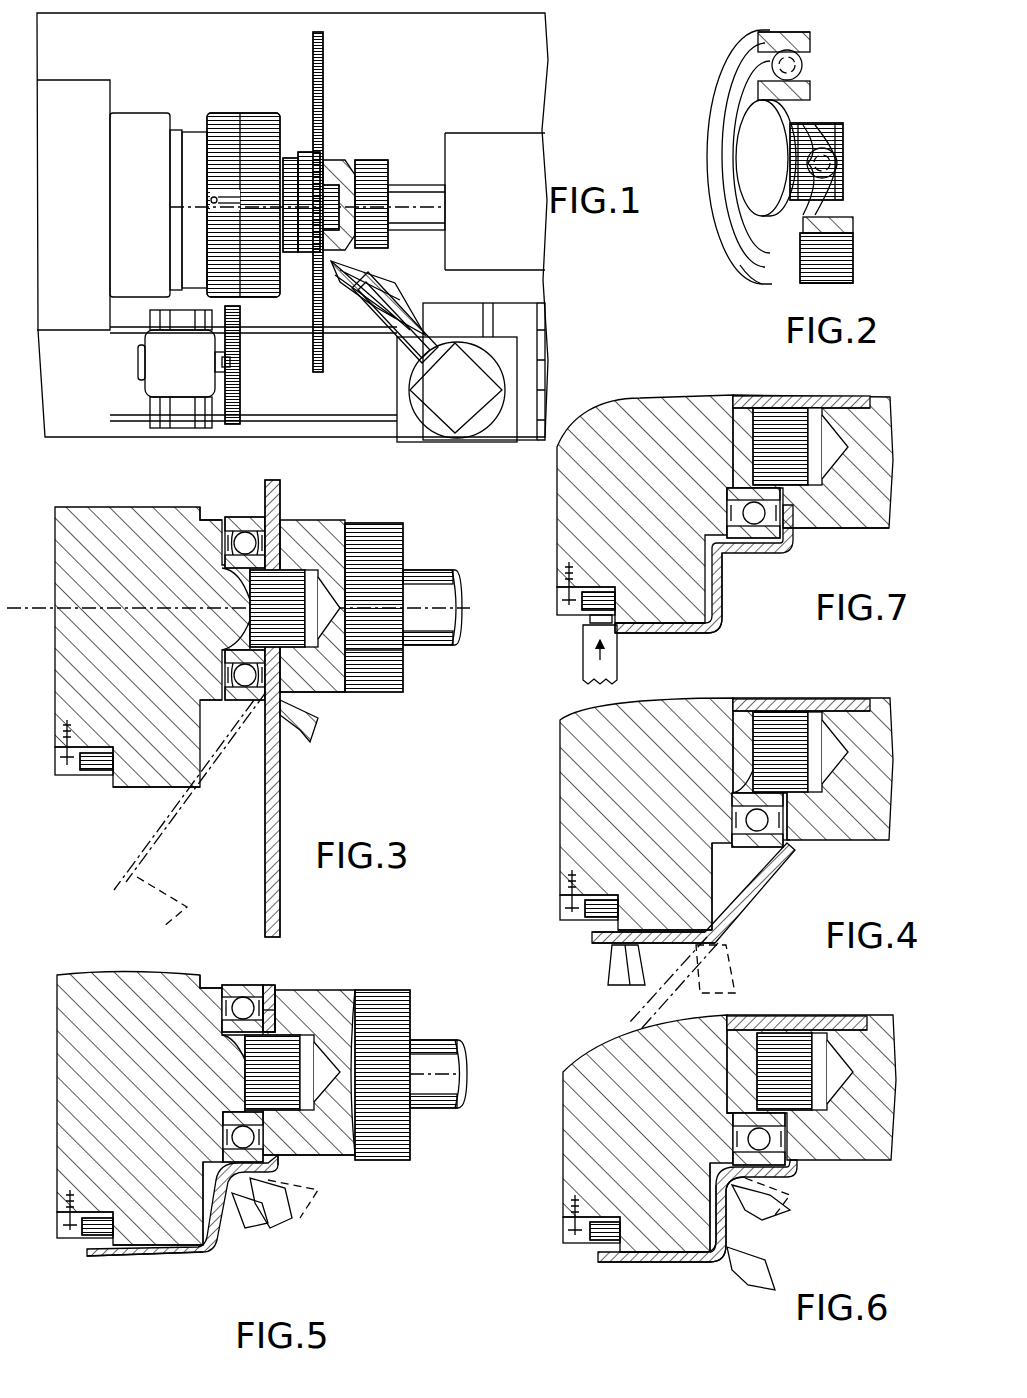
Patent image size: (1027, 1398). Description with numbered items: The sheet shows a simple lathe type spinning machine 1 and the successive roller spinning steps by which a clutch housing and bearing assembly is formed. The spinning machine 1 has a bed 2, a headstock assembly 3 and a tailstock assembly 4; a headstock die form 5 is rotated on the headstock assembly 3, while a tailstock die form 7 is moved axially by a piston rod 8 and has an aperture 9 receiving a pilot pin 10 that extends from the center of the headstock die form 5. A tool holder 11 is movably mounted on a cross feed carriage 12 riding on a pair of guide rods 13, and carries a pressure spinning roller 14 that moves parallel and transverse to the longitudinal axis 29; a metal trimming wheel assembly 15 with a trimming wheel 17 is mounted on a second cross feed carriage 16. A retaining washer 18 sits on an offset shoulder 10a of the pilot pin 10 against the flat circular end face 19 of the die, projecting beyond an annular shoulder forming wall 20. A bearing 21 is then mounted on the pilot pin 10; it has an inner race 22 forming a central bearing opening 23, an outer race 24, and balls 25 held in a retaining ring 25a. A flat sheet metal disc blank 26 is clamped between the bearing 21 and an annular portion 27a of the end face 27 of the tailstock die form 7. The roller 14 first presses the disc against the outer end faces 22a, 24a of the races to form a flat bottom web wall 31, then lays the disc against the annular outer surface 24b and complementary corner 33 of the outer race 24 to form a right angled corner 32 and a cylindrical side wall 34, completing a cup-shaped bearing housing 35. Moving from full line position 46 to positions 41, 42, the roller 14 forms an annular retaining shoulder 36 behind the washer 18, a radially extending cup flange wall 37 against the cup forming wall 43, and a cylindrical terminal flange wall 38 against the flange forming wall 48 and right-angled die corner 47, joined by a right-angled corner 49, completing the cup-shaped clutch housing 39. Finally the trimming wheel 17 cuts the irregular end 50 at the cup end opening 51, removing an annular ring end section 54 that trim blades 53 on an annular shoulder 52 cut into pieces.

In FIG. 1, the spinning machine 1 is at (552, 66).
In FIG. 1, the bed 2 is at (438, 63).
In FIG. 1, the headstock assembly 3 is at (112, 100).
In FIG. 1, the tailstock assembly 4 is at (468, 130).
In FIG. 1, the headstock die form 5 is at (258, 112).
In FIG. 3, the headstock die form 5 is at (78, 552).
In FIG. 7, the headstock die form 5 is at (588, 497).
In FIG. 4, the headstock die form 5 is at (585, 783).
In FIG. 6, the headstock die form 5 is at (585, 1125).
In FIG. 5, the headstock die form 5 is at (92, 972).
In FIG. 1, the tailstock die form 7 is at (362, 160).
In FIG. 3, the tailstock die form 7 is at (395, 540).
In FIG. 7, the tailstock die form 7 is at (872, 533).
In FIG. 4, the tailstock die form 7 is at (872, 700).
In FIG. 6, the tailstock die form 7 is at (875, 1163).
In FIG. 5, the tailstock die form 7 is at (413, 1005).
In FIG. 1, the piston rod 8 is at (410, 187).
In FIG. 3, the piston rod 8 is at (430, 578).
In FIG. 5, the piston rod 8 is at (445, 1048).
In FIG. 1, the aperture 9 is at (335, 160).
In FIG. 3, the aperture 9 is at (325, 555).
In FIG. 7, the aperture 9 is at (830, 470).
In FIG. 5, the aperture 9 is at (309, 1072).
In FIG. 1, the pilot pin 10 is at (336, 212).
In FIG. 3, the pilot pin 10 is at (290, 575).
In FIG. 7, the pilot pin 10 is at (787, 437).
In FIG. 4, the pilot pin 10 is at (800, 715).
In FIG. 6, the pilot pin 10 is at (800, 1040).
In FIG. 5, the pilot pin 10 is at (295, 1058).
In FIG. 3, the offset shoulder 10a is at (222, 560).
In FIG. 5, the offset shoulder 10a is at (235, 1030).
In FIG. 1, the tool holder 11 is at (520, 372).
In FIG. 1, the cross feed carriage 12 is at (525, 320).
In FIG. 1, the guide rods 13 is at (283, 335).
In FIG. 1, the pressure spinning roller 14 is at (372, 318).
In FIG. 3, the pressure spinning roller 14 is at (322, 722).
In FIG. 4, the pressure spinning roller 14 is at (682, 982).
In FIG. 6, the pressure spinning roller 14 is at (770, 1268).
In FIG. 5, the pressure spinning roller 14 is at (250, 1225).
In FIG. 1, the metal trimming wheel assembly 15 is at (143, 393).
In FIG. 1, the second cross feed carriage 16 is at (153, 418).
In FIG. 1, the trimming wheel 17 is at (232, 425).
In FIG. 7, the trimming wheel 17 is at (582, 672).
In FIG. 1, the retaining washer 18 is at (291, 255).
In FIG. 3, the retaining washer 18 is at (236, 518).
In FIG. 5, the retaining washer 18 is at (228, 985).
In FIG. 3, the flat circular end face 19 is at (225, 527).
In FIG. 5, the flat circular end face 19 is at (222, 1150).
In FIG. 3, the annular shoulder forming wall 20 is at (225, 688).
In FIG. 4, the annular shoulder forming wall 20 is at (735, 840).
In FIG. 6, the annular shoulder forming wall 20 is at (722, 1155).
In FIG. 5, the annular shoulder forming wall 20 is at (210, 985).
In FIG. 1, the bearing 21 is at (305, 150).
In FIG. 2, the bearing 21 is at (706, 96).
In FIG. 3, the bearing 21 is at (240, 705).
In FIG. 2, the inner race 22 is at (850, 145).
In FIG. 2, the outer end face of inner race 22a is at (747, 92).
In FIG. 2, the central bearing opening 23 is at (745, 178).
In FIG. 3, the central bearing opening 23 is at (240, 570).
In FIG. 4, the central bearing opening 23 is at (750, 770).
In FIG. 2, the outer race 24 is at (830, 258).
In FIG. 2, the outer end face of outer race 24a is at (742, 270).
In FIG. 5, the outer end face of outer race 24a is at (276, 985).
In FIG. 2, the annular outer surface of outer race 24b is at (787, 32).
In FIG. 5, the annular outer surface of outer race 24b is at (265, 985).
In FIG. 2, the balls 25 is at (799, 64).
In FIG. 2, the retaining ring 25a is at (845, 130).
In FIG. 1, the flat sheet metal disc blank 26 is at (325, 52).
In FIG. 3, the flat sheet metal disc blank 26 is at (281, 805).
In FIG. 3, the end face of tailstock die 27 is at (374, 656).
In FIG. 4, the end face of tailstock die 27 is at (787, 795).
In FIG. 3, the annular portion of end face 27a is at (300, 693).
In FIG. 4, the annular portion of end face 27a is at (792, 822).
In FIG. 5, the annular portion of end face 27a is at (280, 1150).
In FIG. 3, the longitudinal axis 29 is at (483, 610).
In FIG. 5, the flat bottom web wall 31 is at (272, 1005).
In FIG. 4, the right angled corner 32 is at (792, 852).
In FIG. 6, the right angled corner 32 is at (800, 1172).
In FIG. 5, the right angled corner 32 is at (282, 1167).
In FIG. 2, the complementary corner 33 is at (765, 288).
In FIG. 5, the complementary corner 33 is at (278, 1160).
In FIG. 6, the cylindrical side wall 34 is at (775, 1190).
In FIG. 5, the cylindrical side wall 34 is at (280, 1228).
In FIG. 7, the cup-shaped bearing housing 35 is at (792, 549).
In FIG. 5, the cup-shaped bearing housing 35 is at (278, 985).
In FIG. 7, the annular retaining shoulder 36 is at (712, 537).
In FIG. 6, the annular retaining shoulder 36 is at (730, 1160).
In FIG. 7, the radially extending cup flange wall 37 is at (723, 600).
In FIG. 6, the radially extending cup flange wall 37 is at (728, 1228).
In FIG. 7, the cylindrical terminal flange wall 38 is at (680, 634).
In FIG. 4, the cylindrical terminal flange wall 38 is at (670, 946).
In FIG. 6, the cylindrical terminal flange wall 38 is at (645, 1265).
In FIG. 5, the cylindrical terminal flange wall 38 is at (150, 1257).
In FIG. 7, the cup-shaped clutch housing 39 is at (720, 632).
In FIG. 6, the full line position 41 is at (725, 1182).
In FIG. 6, the second full line position 42 is at (722, 1265).
In FIG. 6, the radially extending cup forming wall 43 is at (710, 1201).
In FIG. 5, the radially extending cup forming wall 43 is at (210, 1185).
In FIG. 4, the full-line position 46 is at (620, 946).
In FIG. 4, the right-angled die corner 47 is at (700, 925).
In FIG. 6, the right-angled die corner 47 is at (710, 1240).
In FIG. 3, the cylindrical flange forming wall 48 is at (135, 788).
In FIG. 7, the cylindrical flange forming wall 48 is at (660, 622).
In FIG. 4, the cylindrical flange forming wall 48 is at (645, 930).
In FIG. 6, the cylindrical flange forming wall 48 is at (628, 1263).
In FIG. 5, the cylindrical flange forming wall 48 is at (140, 1243).
In FIG. 6, the right-angled corner 49 is at (712, 1262).
In FIG. 4, the extended irregular end 50 is at (592, 940).
In FIG. 7, the cup end opening 51 is at (638, 634).
In FIG. 3, the annular shoulder 52 is at (96, 761).
In FIG. 7, the annular shoulder 52 is at (600, 600).
In FIG. 4, the annular shoulder 52 is at (601, 908).
In FIG. 6, the annular shoulder 52 is at (605, 1245).
In FIG. 5, the annular shoulder 52 is at (97, 1226).
In FIG. 3, the trim blades 53 is at (84, 747).
In FIG. 7, the trim blades 53 is at (590, 590).
In FIG. 4, the trim blades 53 is at (589, 895).
In FIG. 6, the trim blades 53 is at (565, 1235).
In FIG. 5, the trim blades 53 is at (72, 1240).
In FIG. 7, the annular ring end section 54 is at (588, 619).